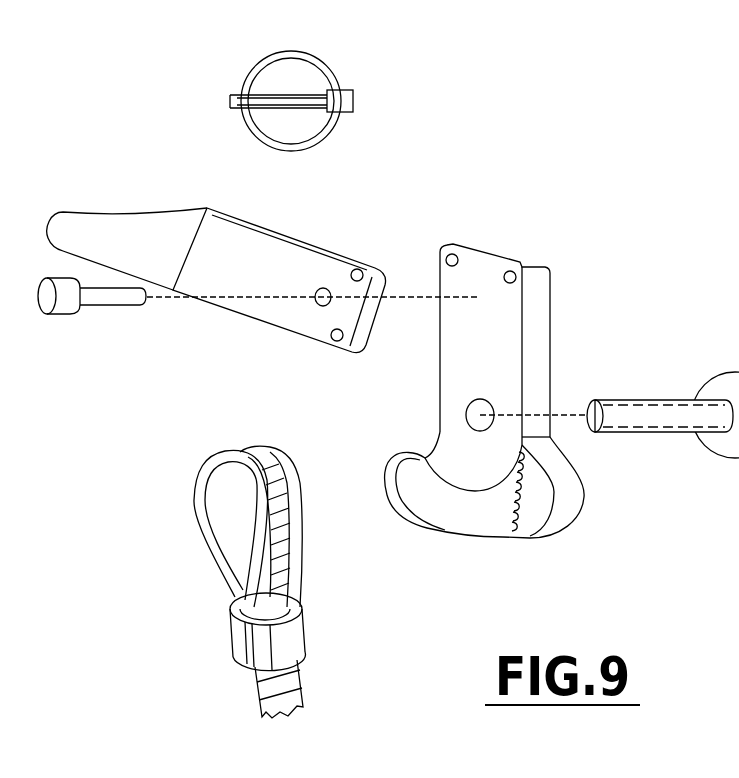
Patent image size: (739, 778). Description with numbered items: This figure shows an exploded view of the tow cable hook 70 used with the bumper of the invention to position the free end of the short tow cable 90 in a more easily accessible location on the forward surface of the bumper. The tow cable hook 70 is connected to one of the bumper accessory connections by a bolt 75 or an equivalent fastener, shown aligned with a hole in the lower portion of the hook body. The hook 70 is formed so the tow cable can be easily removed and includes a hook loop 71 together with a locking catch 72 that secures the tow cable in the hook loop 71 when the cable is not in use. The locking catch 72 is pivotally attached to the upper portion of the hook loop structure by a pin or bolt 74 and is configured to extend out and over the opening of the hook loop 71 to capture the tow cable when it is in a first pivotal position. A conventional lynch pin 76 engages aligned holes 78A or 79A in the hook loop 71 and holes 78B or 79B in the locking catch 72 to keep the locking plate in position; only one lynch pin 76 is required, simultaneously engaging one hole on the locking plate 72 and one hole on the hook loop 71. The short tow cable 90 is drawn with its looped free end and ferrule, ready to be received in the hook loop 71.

The tow cable hook 70 is at (583, 123).
The hook loop 71 is at (575, 507).
The locking catch 72 is at (123, 223).
The bolt 74 is at (100, 300).
The bolt 75 is at (675, 408).
The lynch pin 76 is at (334, 81).
The hole in hook loop 78A is at (511, 274).
The hole in locking catch 78B is at (337, 338).
The hole in hook loop 79A is at (452, 257).
The hole in locking catch 79B is at (357, 275).
The short tow cable 90 is at (230, 600).